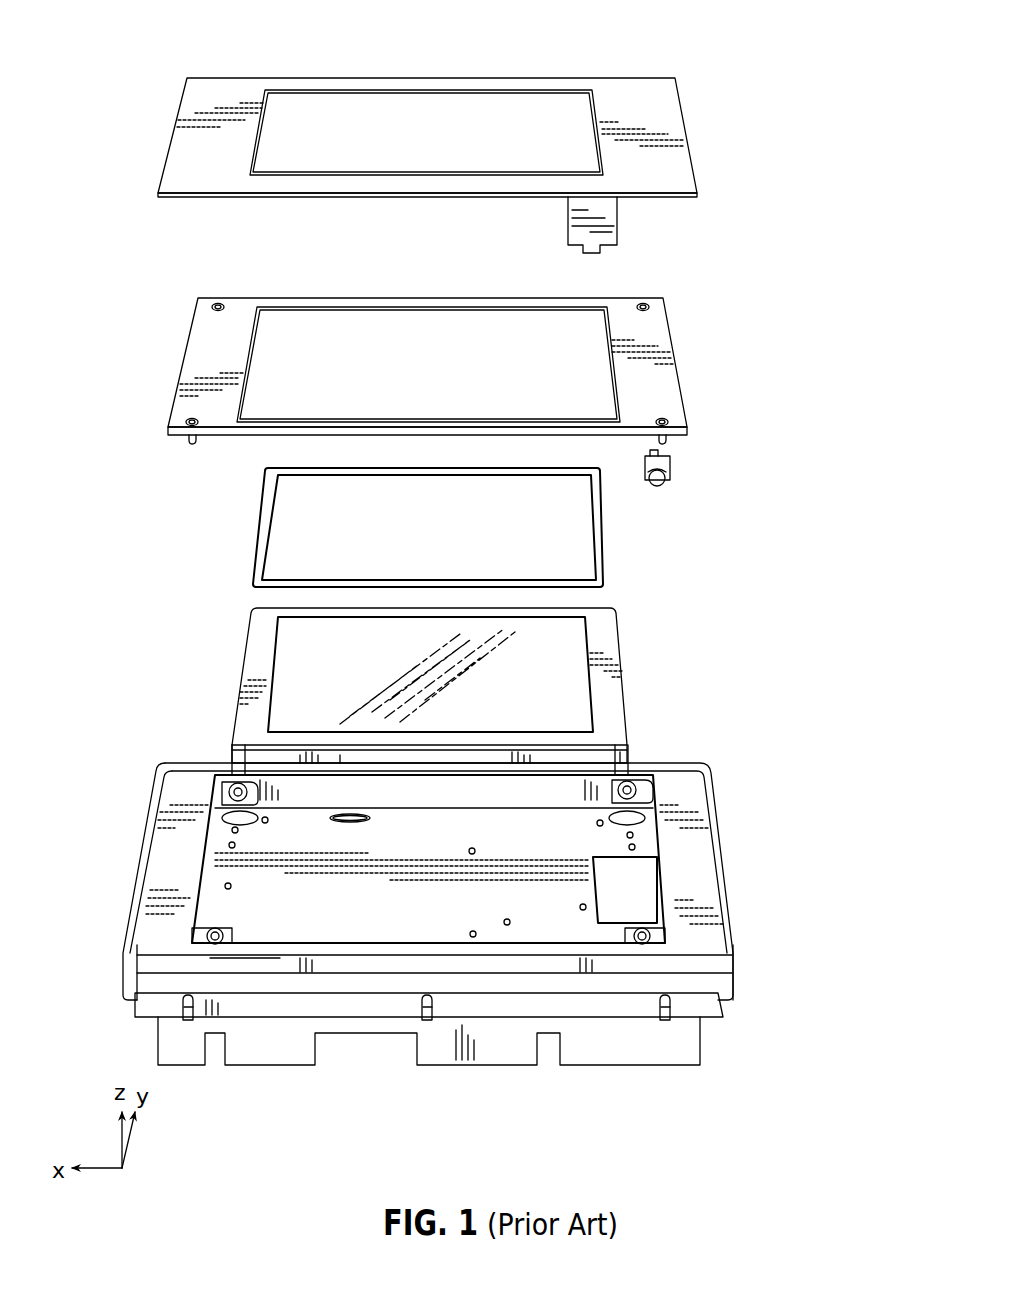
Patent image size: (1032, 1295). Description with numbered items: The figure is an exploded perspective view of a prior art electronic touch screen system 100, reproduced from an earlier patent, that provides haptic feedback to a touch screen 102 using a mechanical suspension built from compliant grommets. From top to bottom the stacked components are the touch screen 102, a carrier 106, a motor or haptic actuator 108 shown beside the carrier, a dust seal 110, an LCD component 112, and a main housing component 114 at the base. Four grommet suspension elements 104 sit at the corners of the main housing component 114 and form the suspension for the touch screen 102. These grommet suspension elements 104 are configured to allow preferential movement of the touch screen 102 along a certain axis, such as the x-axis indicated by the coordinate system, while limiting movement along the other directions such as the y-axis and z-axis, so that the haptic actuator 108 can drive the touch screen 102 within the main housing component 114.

The electronic touch screen system 100 is at (800, 277).
The touch screen 102 is at (720, 111).
The grommet suspension elements 104 is at (238, 790).
The carrier 106 is at (689, 343).
The haptic actuator 108 is at (687, 461).
The dust seal 110 is at (614, 540).
The LCD component 112 is at (640, 660).
The main housing component 114 is at (744, 838).